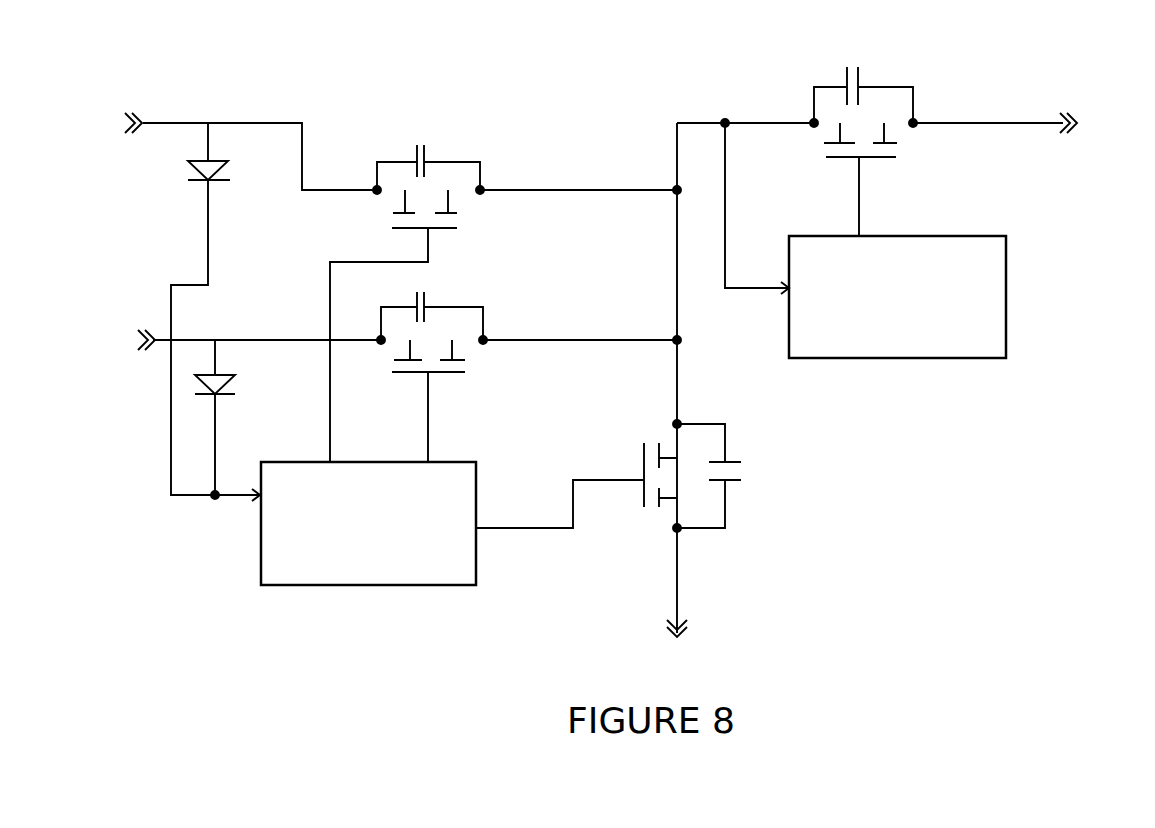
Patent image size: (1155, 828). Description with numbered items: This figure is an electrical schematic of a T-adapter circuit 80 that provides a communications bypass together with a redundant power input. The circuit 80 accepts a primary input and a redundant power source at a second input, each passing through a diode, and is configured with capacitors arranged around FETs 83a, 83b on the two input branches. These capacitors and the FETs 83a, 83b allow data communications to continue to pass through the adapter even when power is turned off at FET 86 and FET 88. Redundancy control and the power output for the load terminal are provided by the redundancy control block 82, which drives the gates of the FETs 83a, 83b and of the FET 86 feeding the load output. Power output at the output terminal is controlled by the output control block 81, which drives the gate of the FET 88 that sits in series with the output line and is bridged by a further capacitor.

The circuit 80 is at (402, 54).
The T_OUT control block 81 is at (883, 360).
The redundancy control block 82 is at (355, 587).
The FET 83a is at (442, 230).
The FET 83b is at (452, 374).
The FET 86 is at (640, 462).
The FET 88 is at (873, 158).